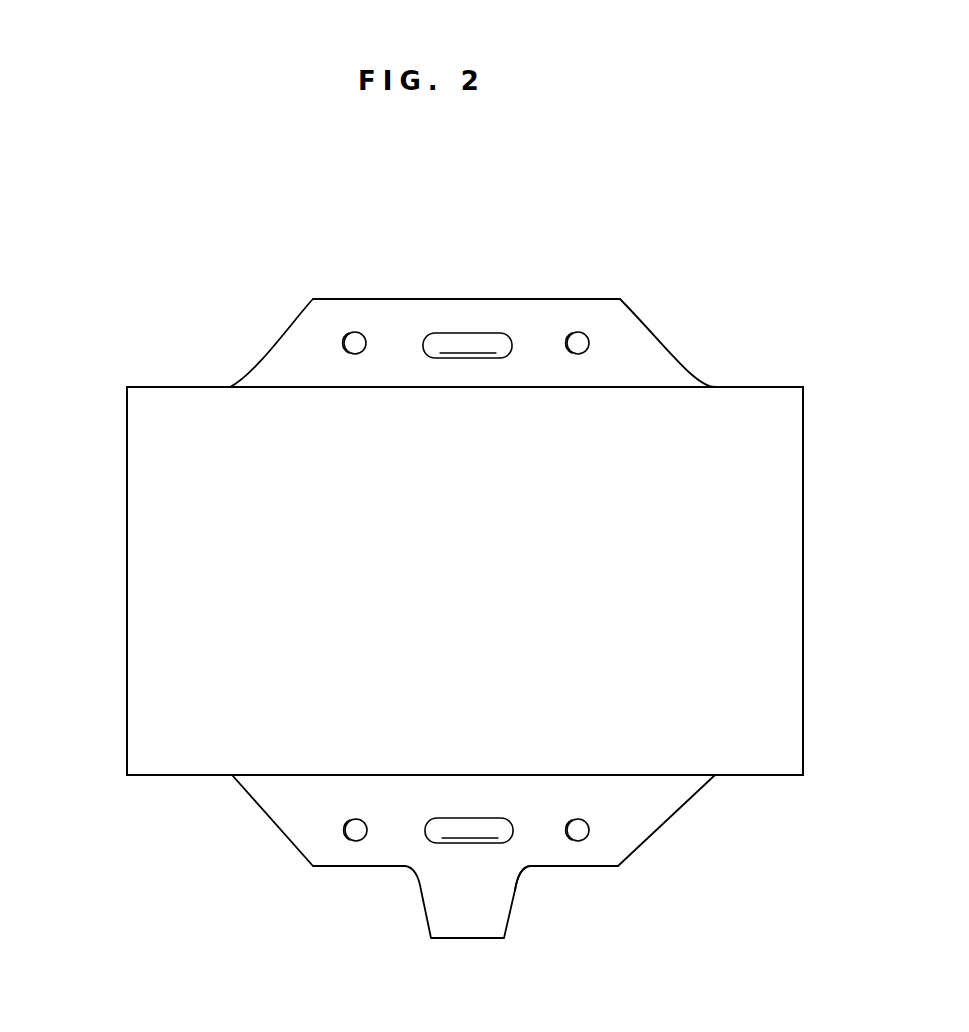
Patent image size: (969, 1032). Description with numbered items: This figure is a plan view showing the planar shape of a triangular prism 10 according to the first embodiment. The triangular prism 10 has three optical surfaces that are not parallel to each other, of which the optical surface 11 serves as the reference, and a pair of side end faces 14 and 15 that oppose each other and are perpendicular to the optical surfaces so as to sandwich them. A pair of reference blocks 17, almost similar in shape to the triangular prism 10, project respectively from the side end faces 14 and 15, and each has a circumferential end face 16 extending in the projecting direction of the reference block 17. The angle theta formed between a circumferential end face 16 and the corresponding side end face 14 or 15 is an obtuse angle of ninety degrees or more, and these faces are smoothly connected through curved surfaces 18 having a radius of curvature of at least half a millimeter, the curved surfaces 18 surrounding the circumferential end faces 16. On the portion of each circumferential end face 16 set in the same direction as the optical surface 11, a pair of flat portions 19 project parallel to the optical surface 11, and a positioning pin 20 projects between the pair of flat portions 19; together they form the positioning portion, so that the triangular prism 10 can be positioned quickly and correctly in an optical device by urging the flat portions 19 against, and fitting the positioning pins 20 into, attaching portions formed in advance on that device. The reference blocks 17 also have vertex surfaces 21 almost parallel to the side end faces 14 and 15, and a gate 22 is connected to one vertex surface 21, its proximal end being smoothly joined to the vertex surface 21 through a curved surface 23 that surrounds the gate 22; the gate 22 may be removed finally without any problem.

The triangular prism 10 is at (745, 232).
The optical surface 11 is at (170, 507).
The side end face 14 is at (152, 778).
The side end face 15 is at (778, 388).
The circumferential end face 16 is at (551, 310).
The reference block 17 is at (617, 299).
The curved surface 18 is at (228, 385).
The flat portion 19 is at (343, 340).
The positioning pin 20 is at (462, 340).
The vertex surface 21 is at (392, 298).
The gate 22 is at (465, 938).
The curved surface 23 is at (530, 868).